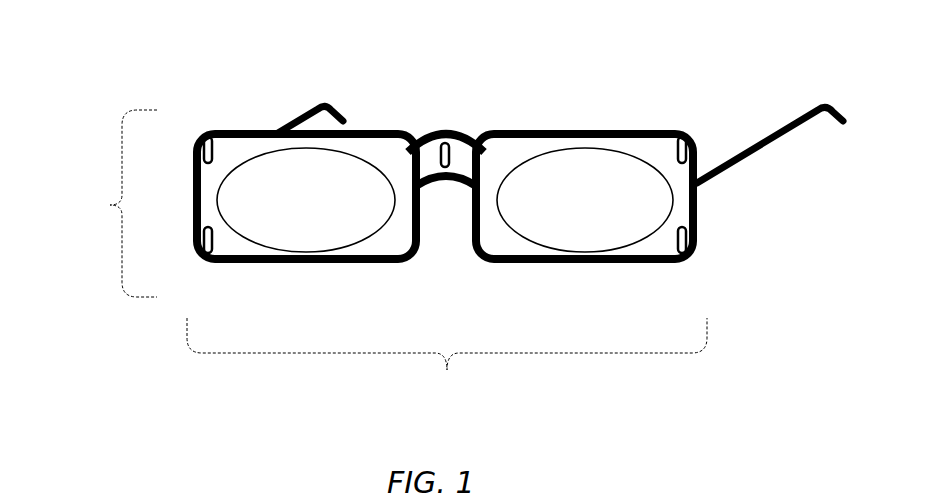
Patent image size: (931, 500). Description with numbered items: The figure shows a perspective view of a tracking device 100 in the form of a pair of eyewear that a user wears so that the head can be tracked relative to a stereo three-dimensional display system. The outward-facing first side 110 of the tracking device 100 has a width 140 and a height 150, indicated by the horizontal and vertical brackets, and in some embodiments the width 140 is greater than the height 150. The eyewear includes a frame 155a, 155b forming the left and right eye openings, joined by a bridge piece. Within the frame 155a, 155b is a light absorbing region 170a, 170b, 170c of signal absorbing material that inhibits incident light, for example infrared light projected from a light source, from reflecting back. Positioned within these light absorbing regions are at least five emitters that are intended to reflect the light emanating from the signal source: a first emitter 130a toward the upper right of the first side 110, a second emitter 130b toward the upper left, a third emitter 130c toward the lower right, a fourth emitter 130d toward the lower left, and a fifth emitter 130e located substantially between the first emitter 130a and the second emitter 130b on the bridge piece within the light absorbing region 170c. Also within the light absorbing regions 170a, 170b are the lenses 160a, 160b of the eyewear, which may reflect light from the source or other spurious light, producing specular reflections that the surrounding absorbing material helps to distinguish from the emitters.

The tracking device 100 is at (290, 68).
The first side 110 is at (375, 147).
The first emitter 130a is at (680, 130).
The second emitter 130b is at (210, 137).
The third emitter 130c is at (680, 260).
The fourth emitter 130d is at (207, 260).
The fifth emitter 130e is at (445, 137).
The width 140 is at (447, 381).
The height 150 is at (93, 203).
The frame 155a is at (310, 265).
The frame 155b is at (590, 263).
The lens 160a is at (330, 205).
The lens 160b is at (608, 205).
The light absorbing region 170a is at (382, 247).
The light absorbing region 170b is at (498, 247).
The light absorbing region 170c is at (463, 145).